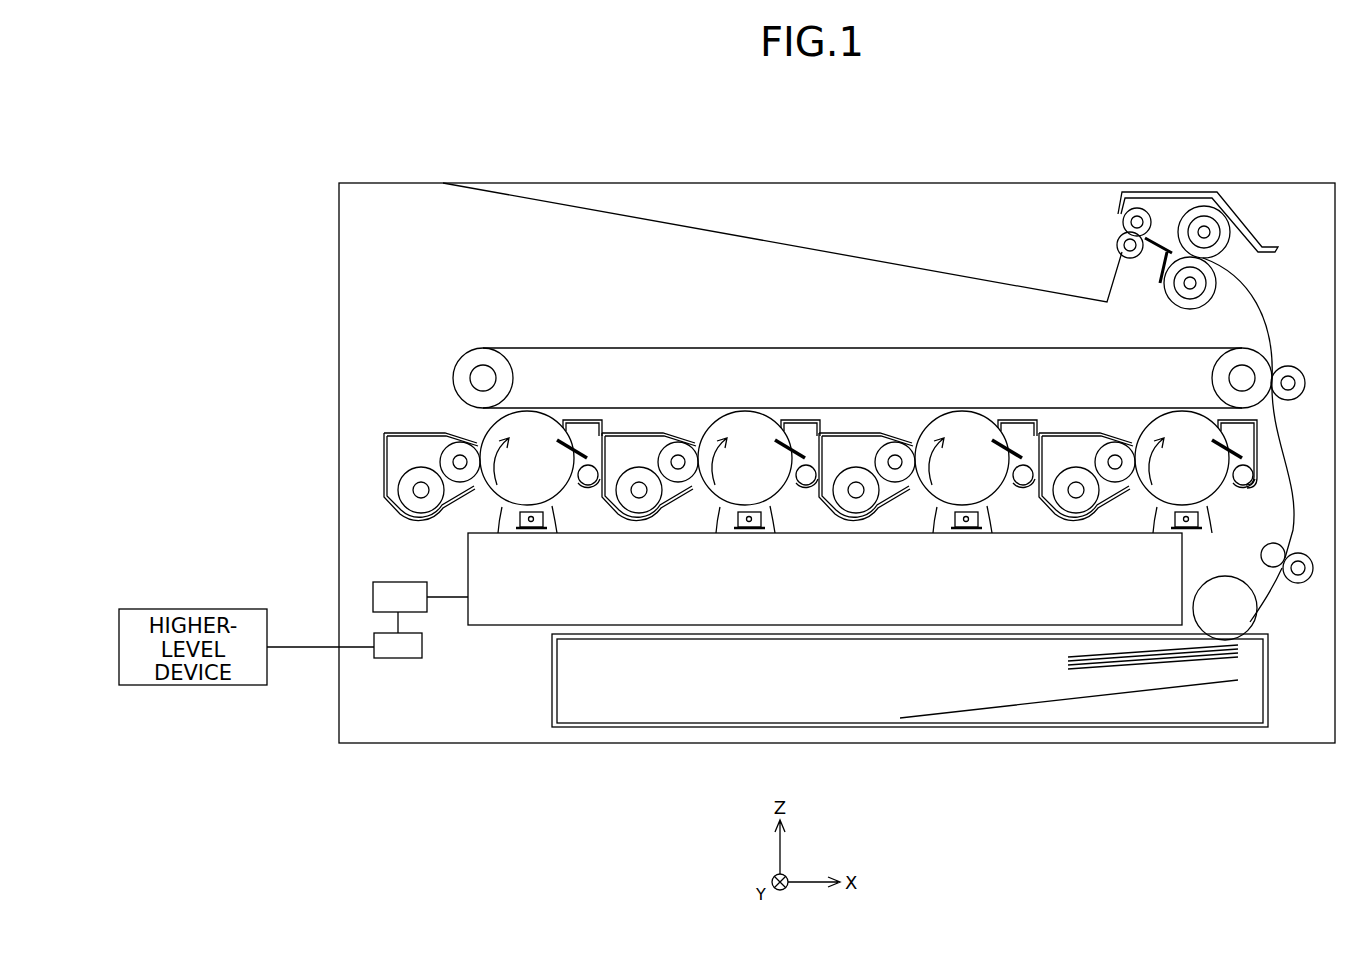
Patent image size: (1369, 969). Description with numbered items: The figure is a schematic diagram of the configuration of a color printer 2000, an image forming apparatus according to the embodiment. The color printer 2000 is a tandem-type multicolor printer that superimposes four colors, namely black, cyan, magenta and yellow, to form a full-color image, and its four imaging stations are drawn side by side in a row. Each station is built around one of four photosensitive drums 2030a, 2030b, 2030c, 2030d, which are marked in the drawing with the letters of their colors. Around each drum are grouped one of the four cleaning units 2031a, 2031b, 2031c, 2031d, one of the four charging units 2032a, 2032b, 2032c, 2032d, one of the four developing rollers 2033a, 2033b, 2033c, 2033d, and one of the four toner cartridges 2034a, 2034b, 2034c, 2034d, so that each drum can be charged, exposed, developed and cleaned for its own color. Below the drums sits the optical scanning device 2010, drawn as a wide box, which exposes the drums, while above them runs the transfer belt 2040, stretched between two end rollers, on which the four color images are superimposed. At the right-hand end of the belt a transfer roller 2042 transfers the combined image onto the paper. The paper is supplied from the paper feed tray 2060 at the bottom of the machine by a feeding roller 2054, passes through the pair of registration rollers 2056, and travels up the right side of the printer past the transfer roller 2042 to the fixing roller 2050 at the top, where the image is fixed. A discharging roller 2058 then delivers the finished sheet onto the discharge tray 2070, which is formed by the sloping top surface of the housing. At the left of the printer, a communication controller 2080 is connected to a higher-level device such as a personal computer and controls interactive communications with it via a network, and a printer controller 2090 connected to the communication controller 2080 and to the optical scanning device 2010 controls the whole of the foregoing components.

The color printer 2000 is at (912, 141).
The optical scanning device 2010 is at (488, 625).
The transfer belt 2040 is at (507, 350).
The transfer roller 2042 is at (1293, 367).
The fixing roller 2050 is at (1167, 293).
The feeding roller 2054 is at (1258, 612).
The pair of registration rollers 2056 is at (1287, 583).
The discharging roller 2058 is at (1117, 242).
The paper feed tray 2060 is at (552, 705).
The discharge tray 2070 is at (938, 272).
The communication controller 2080 is at (377, 658).
The printer controller 2090 is at (388, 582).
The photosensitive drum 2030a is at (1217, 495).
The photosensitive drum 2030b is at (985, 530).
The photosensitive drum 2030c is at (766, 530).
The photosensitive drum 2030d is at (548, 530).
The cleaning unit 2031a is at (1240, 453).
The cleaning unit 2031b is at (1017, 450).
The cleaning unit 2031c is at (797, 450).
The cleaning unit 2031d is at (573, 450).
The charging unit 2032a is at (1185, 528).
The charging unit 2032b is at (965, 530).
The charging unit 2032c is at (747, 530).
The charging unit 2032d is at (532, 530).
The developing roller 2033a is at (1115, 487).
The developing roller 2033b is at (905, 485).
The developing roller 2033c is at (688, 485).
The developing roller 2033d is at (448, 443).
The toner cartridge 2034a is at (1077, 519).
The toner cartridge 2034b is at (857, 519).
The toner cartridge 2034c is at (617, 519).
The toner cartridge 2034d is at (400, 460).